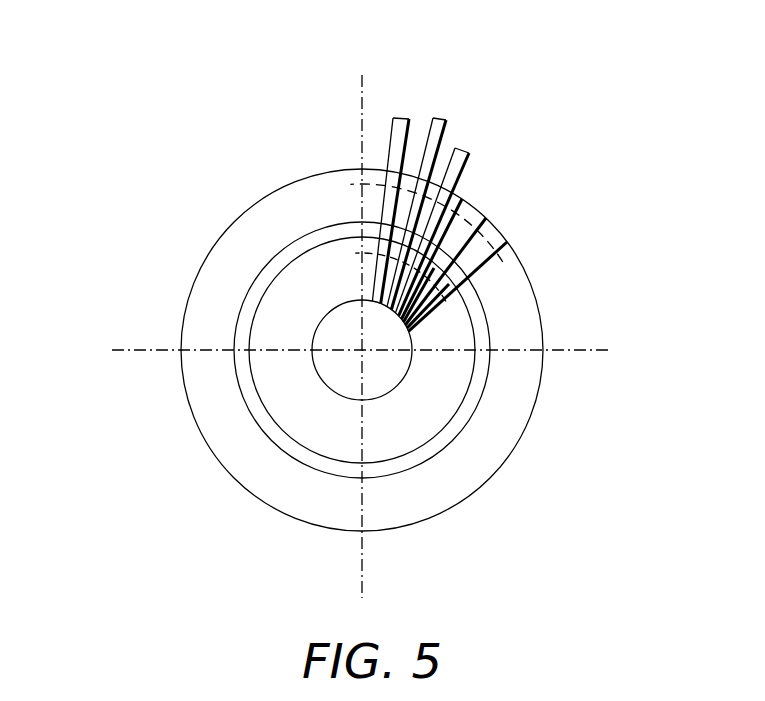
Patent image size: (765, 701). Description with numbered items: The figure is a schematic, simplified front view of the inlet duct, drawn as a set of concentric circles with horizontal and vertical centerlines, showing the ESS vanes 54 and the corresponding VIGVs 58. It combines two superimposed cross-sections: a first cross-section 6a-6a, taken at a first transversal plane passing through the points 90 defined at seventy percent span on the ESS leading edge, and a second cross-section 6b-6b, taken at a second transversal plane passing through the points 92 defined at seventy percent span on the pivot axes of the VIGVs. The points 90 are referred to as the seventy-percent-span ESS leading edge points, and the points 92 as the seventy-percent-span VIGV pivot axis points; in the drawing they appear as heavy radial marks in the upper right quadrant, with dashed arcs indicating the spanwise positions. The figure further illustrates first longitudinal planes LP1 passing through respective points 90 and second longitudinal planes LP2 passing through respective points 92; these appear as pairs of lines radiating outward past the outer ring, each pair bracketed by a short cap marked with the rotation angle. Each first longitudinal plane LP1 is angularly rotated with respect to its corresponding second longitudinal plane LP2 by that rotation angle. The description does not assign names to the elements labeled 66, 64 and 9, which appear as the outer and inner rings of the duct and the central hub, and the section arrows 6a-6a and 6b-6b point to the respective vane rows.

The housing wall 66 is at (545, 373).
The ring 64 is at (427, 460).
The VIGVs 58 is at (473, 368).
The shaft 9 is at (362, 350).
The ESS vanes 54 is at (378, 207).
The 70% span ESS leading edge points 90 is at (488, 224).
The 70% span VIGV pivot axis points 92 is at (453, 280).
The first longitudinal planes LP1 is at (392, 119).
The second longitudinal planes LP2 is at (413, 128).
The first cross-section 6a-6a is at (242, 246).
The second cross-section 6b-6b is at (276, 371).